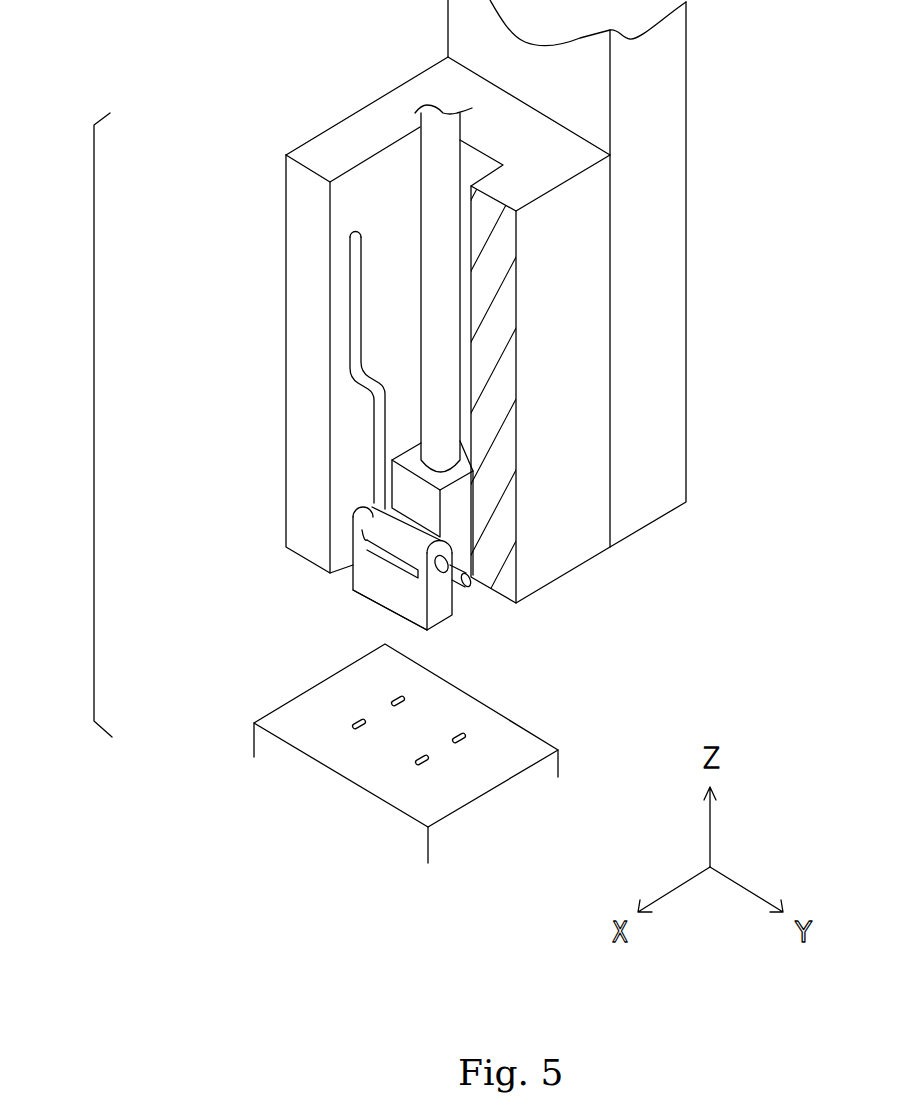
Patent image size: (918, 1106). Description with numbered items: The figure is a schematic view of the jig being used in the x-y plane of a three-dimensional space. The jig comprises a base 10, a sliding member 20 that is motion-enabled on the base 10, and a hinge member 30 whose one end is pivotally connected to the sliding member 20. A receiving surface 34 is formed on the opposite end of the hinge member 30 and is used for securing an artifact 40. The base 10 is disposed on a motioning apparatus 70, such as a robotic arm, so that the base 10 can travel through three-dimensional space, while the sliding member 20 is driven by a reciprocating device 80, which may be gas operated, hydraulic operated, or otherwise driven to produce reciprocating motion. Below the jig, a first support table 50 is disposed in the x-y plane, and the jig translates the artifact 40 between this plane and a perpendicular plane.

The base 10 is at (298, 278).
The sliding member 20 is at (407, 485).
The hinge member 30 is at (370, 578).
The receiving surface 34 is at (375, 600).
The artifact 40 is at (458, 735).
The first support table 50 is at (421, 750).
The motioning apparatus 70 is at (663, 252).
The reciprocating device 80 is at (433, 162).